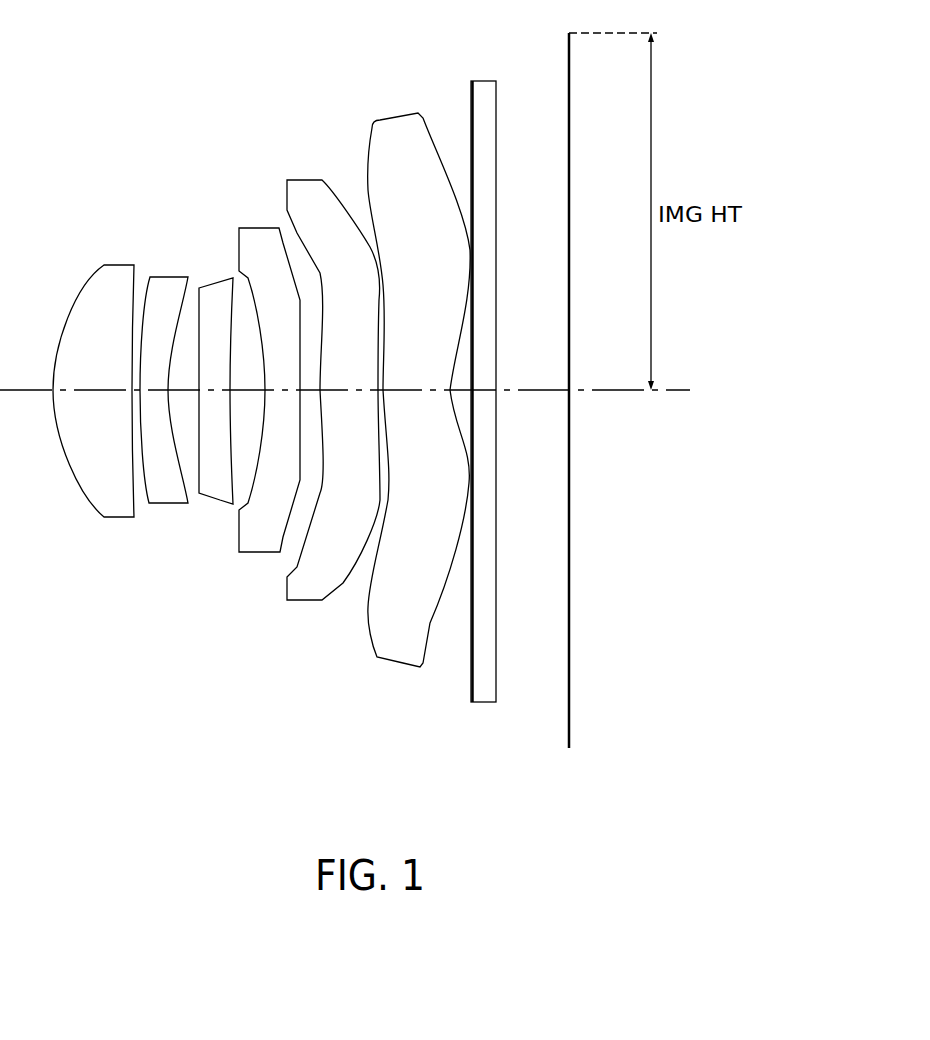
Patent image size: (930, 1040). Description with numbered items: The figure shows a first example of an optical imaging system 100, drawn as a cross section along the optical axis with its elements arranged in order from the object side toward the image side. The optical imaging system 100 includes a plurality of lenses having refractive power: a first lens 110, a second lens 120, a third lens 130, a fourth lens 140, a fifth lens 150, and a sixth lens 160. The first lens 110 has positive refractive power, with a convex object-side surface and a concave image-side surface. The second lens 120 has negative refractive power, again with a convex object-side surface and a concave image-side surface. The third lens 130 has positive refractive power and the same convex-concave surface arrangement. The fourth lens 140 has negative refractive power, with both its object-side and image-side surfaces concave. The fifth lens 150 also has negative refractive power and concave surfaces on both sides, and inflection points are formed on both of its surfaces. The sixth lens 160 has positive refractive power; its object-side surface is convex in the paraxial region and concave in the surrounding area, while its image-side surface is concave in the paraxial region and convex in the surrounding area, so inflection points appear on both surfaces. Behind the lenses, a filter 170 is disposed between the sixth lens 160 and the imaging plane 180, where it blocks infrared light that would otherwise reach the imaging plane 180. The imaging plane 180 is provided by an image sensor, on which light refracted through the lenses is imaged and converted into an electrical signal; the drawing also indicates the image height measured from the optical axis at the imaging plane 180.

The optical imaging system 100 is at (182, 90).
The first lens 110 is at (120, 517).
The second lens 120 is at (170, 505).
The third lens 130 is at (220, 503).
The fourth lens 140 is at (263, 557).
The fifth lens 150 is at (305, 603).
The sixth lens 160 is at (403, 665).
The filter 170 is at (485, 703).
The imaging plane 180 is at (569, 715).